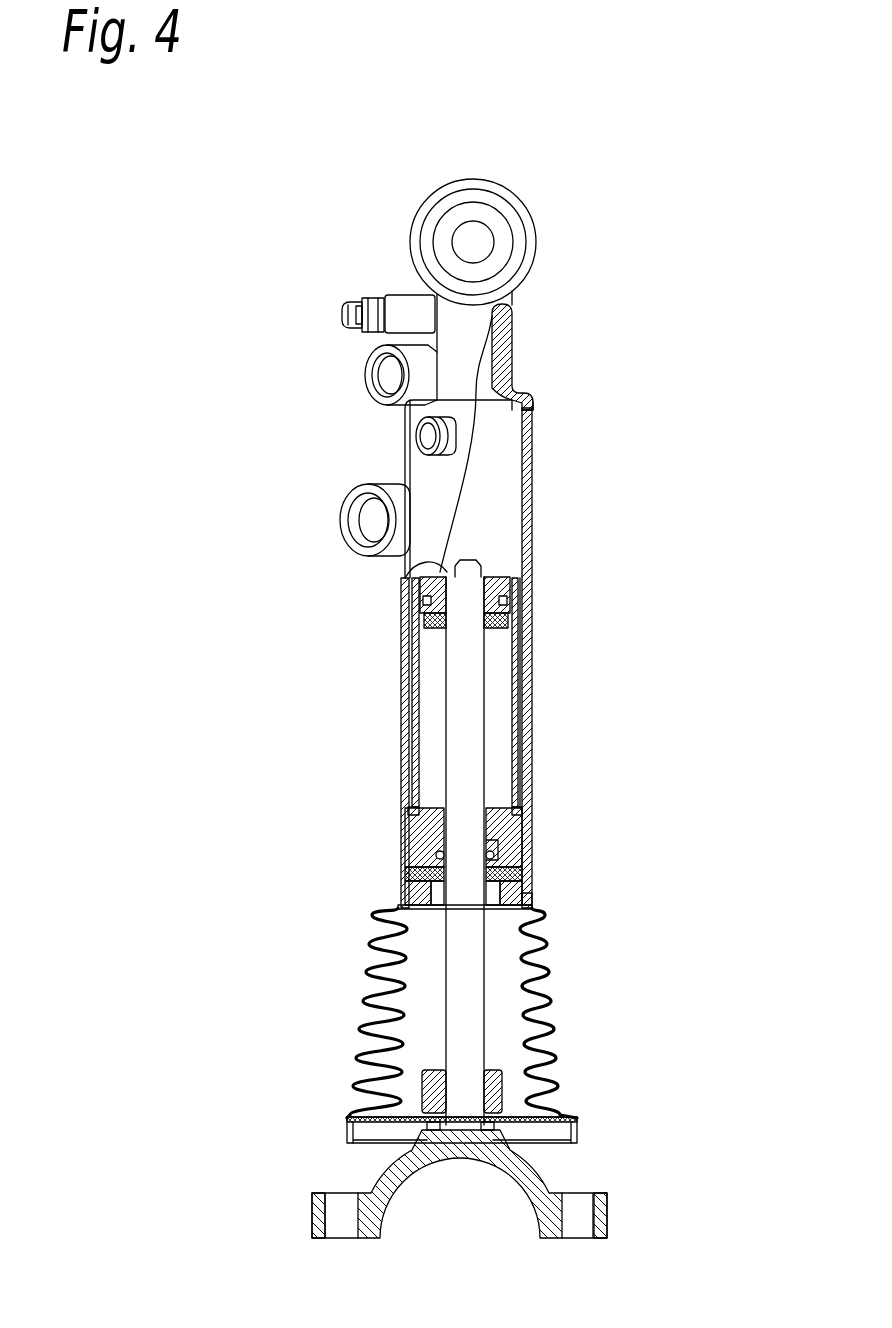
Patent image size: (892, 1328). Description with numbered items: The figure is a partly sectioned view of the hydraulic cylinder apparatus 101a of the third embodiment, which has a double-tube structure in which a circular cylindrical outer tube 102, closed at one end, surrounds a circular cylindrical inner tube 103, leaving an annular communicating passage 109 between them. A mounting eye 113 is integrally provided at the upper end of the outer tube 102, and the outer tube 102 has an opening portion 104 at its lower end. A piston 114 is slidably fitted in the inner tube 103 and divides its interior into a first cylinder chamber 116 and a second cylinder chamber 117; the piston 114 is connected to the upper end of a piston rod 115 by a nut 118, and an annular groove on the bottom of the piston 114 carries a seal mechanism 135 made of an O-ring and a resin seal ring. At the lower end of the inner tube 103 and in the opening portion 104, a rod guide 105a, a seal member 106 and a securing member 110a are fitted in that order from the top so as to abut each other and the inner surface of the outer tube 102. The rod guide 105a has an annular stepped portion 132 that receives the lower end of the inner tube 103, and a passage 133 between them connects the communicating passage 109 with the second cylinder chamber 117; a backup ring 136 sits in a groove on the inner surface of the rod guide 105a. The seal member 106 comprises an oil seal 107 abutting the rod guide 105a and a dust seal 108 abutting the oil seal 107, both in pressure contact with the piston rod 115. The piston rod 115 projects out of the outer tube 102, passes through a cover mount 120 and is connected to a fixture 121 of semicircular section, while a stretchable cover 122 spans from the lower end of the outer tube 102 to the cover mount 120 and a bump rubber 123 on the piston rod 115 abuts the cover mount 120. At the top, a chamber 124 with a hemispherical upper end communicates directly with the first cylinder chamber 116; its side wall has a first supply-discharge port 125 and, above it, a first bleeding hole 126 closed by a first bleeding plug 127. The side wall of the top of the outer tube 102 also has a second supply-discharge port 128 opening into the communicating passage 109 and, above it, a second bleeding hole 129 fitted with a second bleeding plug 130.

The hydraulic cylinder apparatus 101a is at (662, 260).
The outer tube 102 is at (532, 524).
The inner tube 103 is at (517, 490).
The opening portion 104 is at (395, 915).
The rod guide 105a is at (400, 830).
The seal member 106 is at (359, 897).
The oil seal 107 is at (398, 870).
The dust seal 108 is at (398, 882).
The communicating passage 109 is at (402, 637).
The securing member 110a is at (520, 900).
The mounting eye 113 is at (535, 232).
The piston 114 is at (518, 568).
The piston rod 115 is at (475, 720).
The first cylinder chamber 116 is at (500, 412).
The second cylinder chamber 117 is at (522, 663).
The nut 118 is at (410, 568).
The cover mount 120 is at (570, 1112).
The fixture 121 is at (530, 1170).
The stretchable cover 122 is at (545, 1000).
The bump rubber 123 is at (420, 1090).
The chamber 124 is at (490, 355).
The first supply-discharge port 125 is at (380, 347).
The first bleeding hole 126 is at (410, 312).
The first bleeding plug 127 is at (345, 303).
The second supply-discharge port 128 is at (370, 485).
The second bleeding hole 129 is at (535, 460).
The second bleeding plug 130 is at (420, 436).
The annular stepped portion 132 is at (515, 800).
The passage 133 is at (402, 795).
The seal mechanism 135 is at (520, 603).
The backup ring 136 is at (510, 850).